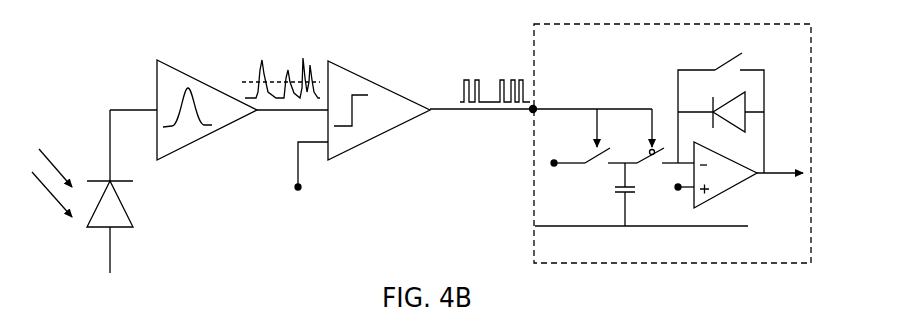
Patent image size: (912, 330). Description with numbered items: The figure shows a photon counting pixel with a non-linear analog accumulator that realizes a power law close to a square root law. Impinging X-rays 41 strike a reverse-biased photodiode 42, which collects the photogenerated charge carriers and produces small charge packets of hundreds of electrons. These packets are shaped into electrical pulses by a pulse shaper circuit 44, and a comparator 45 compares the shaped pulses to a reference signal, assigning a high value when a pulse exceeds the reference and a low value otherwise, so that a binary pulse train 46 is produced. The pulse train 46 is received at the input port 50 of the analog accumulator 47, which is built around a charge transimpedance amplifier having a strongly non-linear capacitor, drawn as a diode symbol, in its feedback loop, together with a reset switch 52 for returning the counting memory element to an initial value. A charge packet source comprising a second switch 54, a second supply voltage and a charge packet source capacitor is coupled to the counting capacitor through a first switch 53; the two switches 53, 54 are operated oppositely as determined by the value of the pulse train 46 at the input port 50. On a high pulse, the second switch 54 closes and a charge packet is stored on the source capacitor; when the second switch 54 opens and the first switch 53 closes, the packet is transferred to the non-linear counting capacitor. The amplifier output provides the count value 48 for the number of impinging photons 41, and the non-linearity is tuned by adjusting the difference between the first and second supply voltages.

The impinging X-rays 41 is at (49, 183).
The photodiode 42 is at (113, 197).
The pulse shaper circuit 44 is at (170, 88).
The comparator 45 is at (335, 90).
The pulse train 46 is at (447, 85).
The analog accumulator 47 is at (595, 24).
The count value 48 is at (772, 175).
The input port 50 is at (535, 102).
The reset switch 52 is at (687, 47).
The first switch 53 is at (658, 136).
The second switch 54 is at (561, 148).